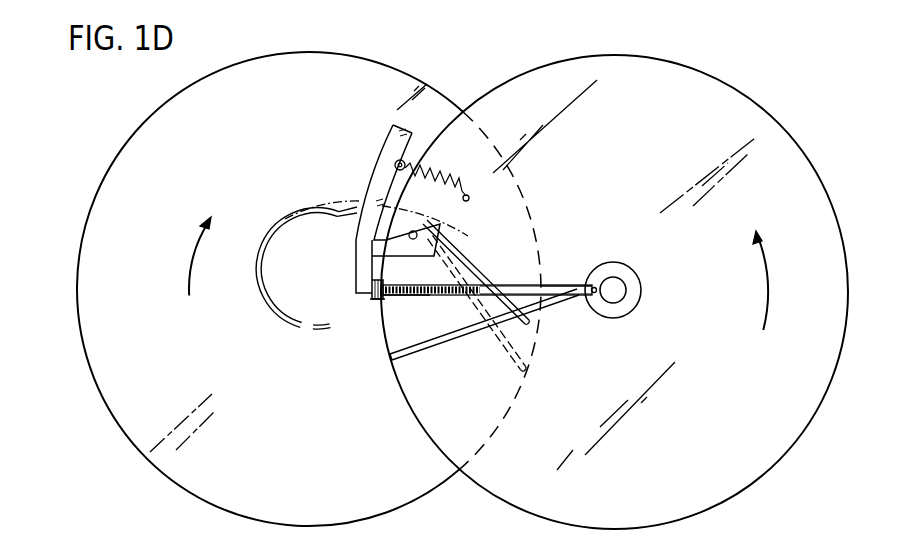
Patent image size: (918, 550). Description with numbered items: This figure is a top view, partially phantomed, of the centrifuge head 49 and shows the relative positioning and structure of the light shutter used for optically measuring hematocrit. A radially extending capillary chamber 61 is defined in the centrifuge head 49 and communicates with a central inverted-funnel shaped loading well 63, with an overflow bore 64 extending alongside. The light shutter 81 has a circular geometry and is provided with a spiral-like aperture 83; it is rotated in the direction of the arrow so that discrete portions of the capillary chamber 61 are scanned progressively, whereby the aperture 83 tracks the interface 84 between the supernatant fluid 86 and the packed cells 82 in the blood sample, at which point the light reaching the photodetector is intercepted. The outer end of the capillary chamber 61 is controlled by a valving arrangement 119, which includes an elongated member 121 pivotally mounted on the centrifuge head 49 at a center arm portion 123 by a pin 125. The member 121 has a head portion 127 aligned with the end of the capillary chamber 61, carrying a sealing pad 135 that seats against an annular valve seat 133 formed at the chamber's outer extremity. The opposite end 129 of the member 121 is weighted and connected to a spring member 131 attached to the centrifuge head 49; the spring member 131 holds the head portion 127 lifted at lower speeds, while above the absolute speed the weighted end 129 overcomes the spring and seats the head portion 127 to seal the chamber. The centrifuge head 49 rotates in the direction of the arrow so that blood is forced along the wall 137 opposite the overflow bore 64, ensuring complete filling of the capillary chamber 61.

The light shutter 81 is at (128, 138).
The centrifuge head 49 is at (737, 97).
The valving arrangement 119 is at (381, 133).
The opposite end 129 is at (373, 167).
The spring member 131 is at (438, 180).
The elongated member 121 is at (325, 209).
The spiral-like aperture 83 is at (272, 249).
The head portion 127 is at (357, 279).
The pin 125 is at (455, 233).
The center arm portion 123 is at (428, 229).
The annular valve seat 133 is at (383, 284).
The sealing pad 135 is at (373, 300).
The wall 137 is at (437, 296).
The capillary chamber 61 is at (523, 287).
The supernatant fluid 86 is at (547, 284).
The packed cells 82 is at (397, 300).
The overflow bore 64 is at (458, 335).
The interface 84 is at (492, 275).
The loading well 63 is at (632, 300).